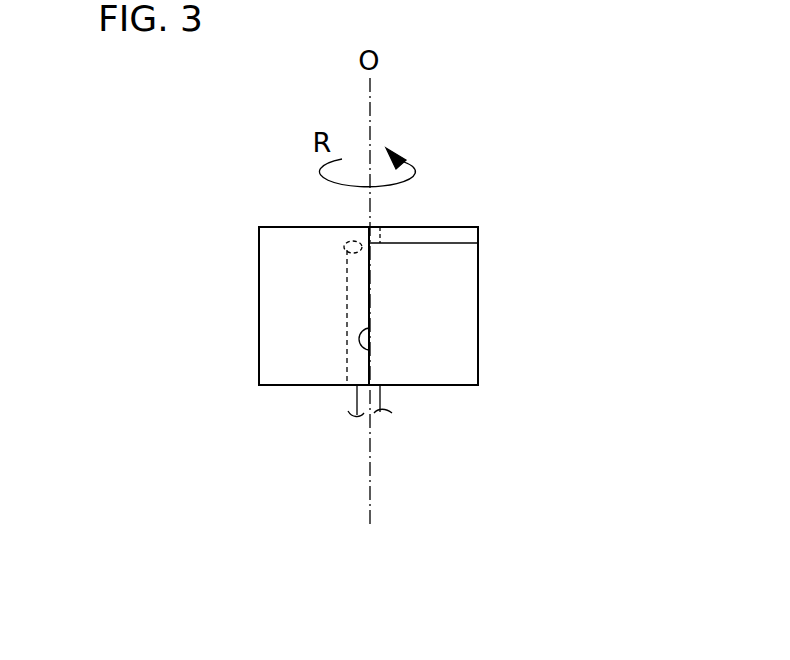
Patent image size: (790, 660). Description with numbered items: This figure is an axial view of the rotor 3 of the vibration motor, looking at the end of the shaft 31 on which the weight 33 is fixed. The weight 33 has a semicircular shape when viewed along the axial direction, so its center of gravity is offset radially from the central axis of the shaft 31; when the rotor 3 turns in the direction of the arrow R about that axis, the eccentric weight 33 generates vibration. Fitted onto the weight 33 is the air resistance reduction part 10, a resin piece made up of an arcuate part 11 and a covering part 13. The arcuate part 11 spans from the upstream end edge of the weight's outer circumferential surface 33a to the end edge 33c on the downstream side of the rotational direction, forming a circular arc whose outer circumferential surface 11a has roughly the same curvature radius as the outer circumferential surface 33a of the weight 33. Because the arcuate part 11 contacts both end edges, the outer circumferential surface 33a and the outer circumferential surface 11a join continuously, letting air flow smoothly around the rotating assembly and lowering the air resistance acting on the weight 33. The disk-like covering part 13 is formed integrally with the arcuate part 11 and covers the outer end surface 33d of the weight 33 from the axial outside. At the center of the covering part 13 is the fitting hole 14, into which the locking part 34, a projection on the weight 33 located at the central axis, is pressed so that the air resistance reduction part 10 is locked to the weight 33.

The rotor 3 is at (524, 282).
The air resistance reduction part 10 is at (455, 222).
The arcuate part 11 is at (259, 262).
The outer circumferential surface of the arcuate part 11a is at (286, 332).
The covering part 13 is at (413, 240).
The fitting hole 14 is at (345, 247).
The shaft 31 is at (375, 397).
The weight 33 is at (487, 250).
The outer circumferential surface of the weight 33a is at (467, 320).
The end edge on the downstream side 33c is at (370, 350).
The outer end surface of the weight 33d is at (468, 240).
The locking part 34 is at (360, 240).